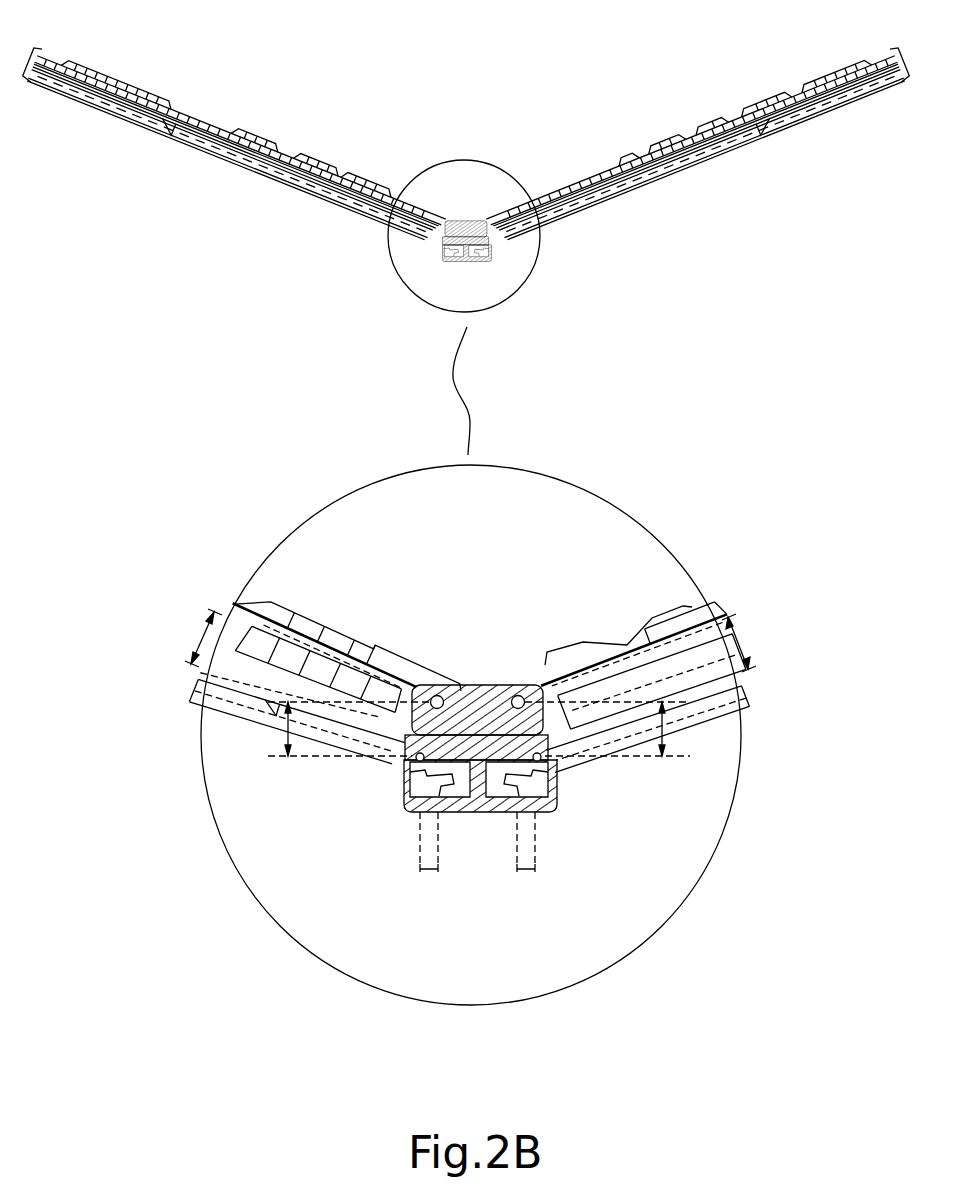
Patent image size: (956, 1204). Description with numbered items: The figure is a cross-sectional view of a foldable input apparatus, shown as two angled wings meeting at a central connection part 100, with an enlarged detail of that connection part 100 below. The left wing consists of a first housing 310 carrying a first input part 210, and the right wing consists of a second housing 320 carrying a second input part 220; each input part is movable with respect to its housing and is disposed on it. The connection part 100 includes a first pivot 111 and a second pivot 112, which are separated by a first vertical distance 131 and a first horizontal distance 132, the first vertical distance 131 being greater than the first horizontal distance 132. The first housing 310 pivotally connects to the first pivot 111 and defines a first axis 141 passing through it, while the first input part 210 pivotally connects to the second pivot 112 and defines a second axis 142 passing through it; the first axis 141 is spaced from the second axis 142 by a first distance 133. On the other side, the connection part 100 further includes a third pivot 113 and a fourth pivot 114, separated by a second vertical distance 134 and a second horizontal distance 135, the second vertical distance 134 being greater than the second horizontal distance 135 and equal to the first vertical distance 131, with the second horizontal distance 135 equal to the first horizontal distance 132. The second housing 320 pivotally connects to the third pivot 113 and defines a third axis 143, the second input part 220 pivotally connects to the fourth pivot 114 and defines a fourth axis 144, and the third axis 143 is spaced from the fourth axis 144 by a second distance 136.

The connection part 100 is at (492, 255).
The first pivot 111 is at (412, 766).
The second pivot 112 is at (432, 697).
The third pivot 113 is at (542, 766).
The fourth pivot 114 is at (518, 696).
The first vertical distance 131 is at (333, 729).
The first horizontal distance 132 is at (429, 872).
The first distance 133 is at (200, 640).
The second vertical distance 134 is at (622, 732).
The second horizontal distance 135 is at (526, 872).
The second distance 136 is at (741, 643).
The first axis 141 is at (240, 686).
The second axis 142 is at (258, 607).
The third axis 143 is at (710, 688).
The fourth axis 144 is at (680, 628).
The first input part 210 is at (148, 98).
The second input part 220 is at (788, 85).
The first housing 310 is at (224, 160).
The second housing 320 is at (832, 110).